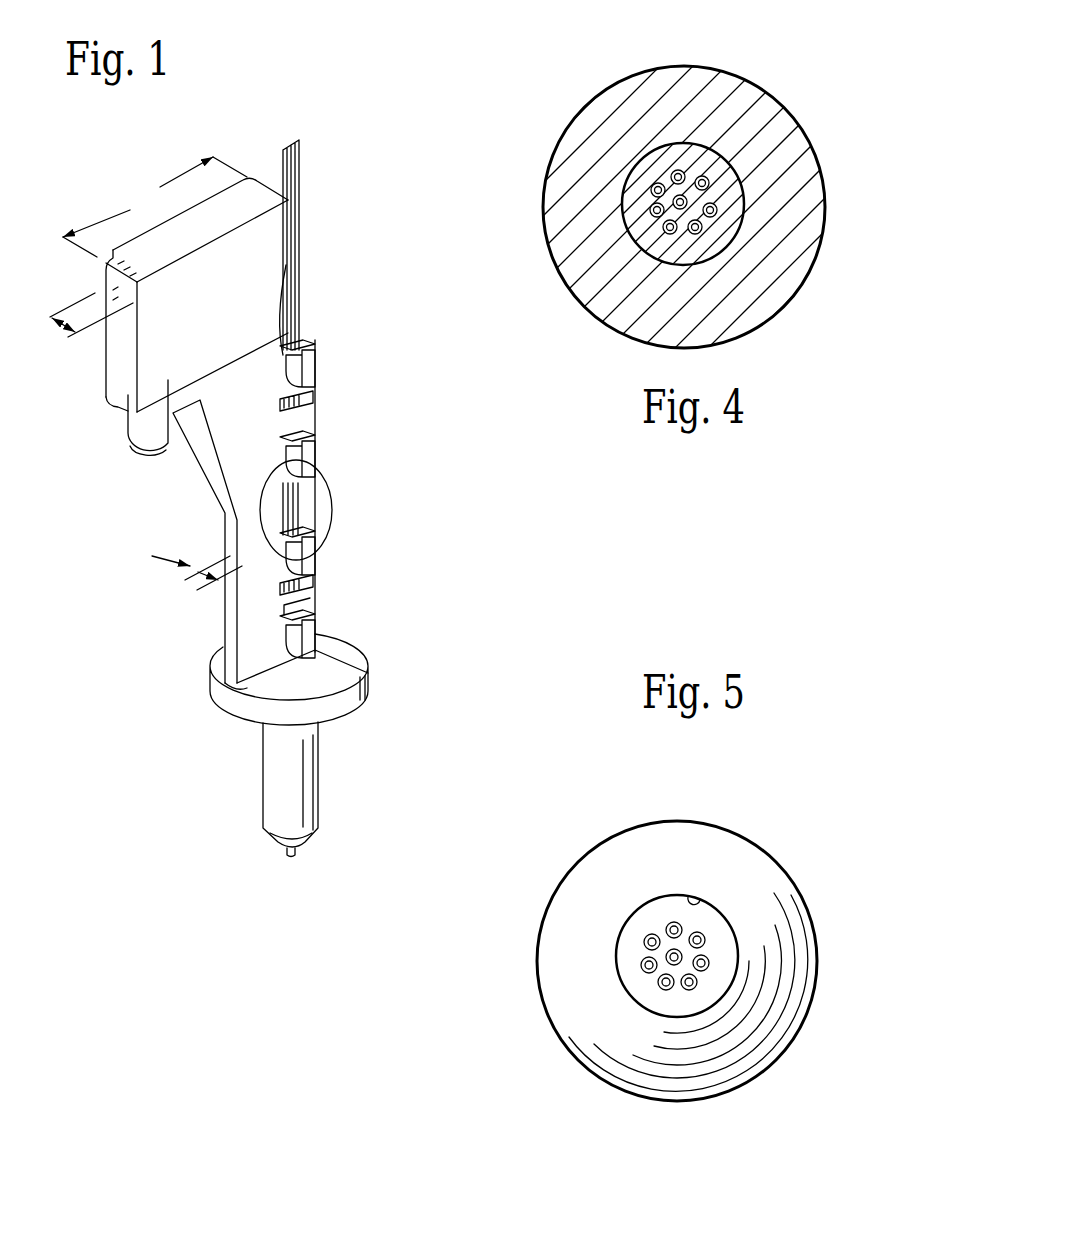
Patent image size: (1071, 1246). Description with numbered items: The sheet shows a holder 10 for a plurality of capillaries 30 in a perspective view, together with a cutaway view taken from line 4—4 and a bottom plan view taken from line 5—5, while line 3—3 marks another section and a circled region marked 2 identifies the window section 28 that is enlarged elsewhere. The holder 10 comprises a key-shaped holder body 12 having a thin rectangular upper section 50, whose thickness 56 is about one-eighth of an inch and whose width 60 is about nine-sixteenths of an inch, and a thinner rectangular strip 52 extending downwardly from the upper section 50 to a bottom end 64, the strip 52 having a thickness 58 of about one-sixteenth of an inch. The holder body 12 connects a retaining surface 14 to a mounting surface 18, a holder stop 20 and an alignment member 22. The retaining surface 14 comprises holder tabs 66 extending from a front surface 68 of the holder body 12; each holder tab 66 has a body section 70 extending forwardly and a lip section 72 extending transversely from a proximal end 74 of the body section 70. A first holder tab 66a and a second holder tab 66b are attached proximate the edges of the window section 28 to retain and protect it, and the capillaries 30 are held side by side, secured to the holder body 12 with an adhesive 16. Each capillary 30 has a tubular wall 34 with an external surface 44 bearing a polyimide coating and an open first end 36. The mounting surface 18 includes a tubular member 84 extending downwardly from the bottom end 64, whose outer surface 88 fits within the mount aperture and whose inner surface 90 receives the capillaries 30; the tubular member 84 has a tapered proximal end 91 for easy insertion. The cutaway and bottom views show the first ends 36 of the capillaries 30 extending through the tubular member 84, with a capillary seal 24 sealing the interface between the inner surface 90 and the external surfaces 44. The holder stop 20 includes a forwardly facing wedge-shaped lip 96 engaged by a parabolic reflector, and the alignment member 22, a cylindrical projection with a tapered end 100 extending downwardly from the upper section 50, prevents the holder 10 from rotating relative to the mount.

In FIG. 1, the holder 10 is at (253, 151).
In FIG. 4, the holder 10 is at (603, 68).
In FIG. 5, the holder 10 is at (812, 846).
In FIG. 1, the holder body 12 is at (200, 447).
In FIG. 1, the retaining surface 14 is at (330, 395).
In FIG. 1, the adhesive 16 is at (292, 262).
In FIG. 1, the mounting surface 18 is at (258, 812).
In FIG. 4, the mounting surface 18 is at (735, 72).
In FIG. 5, the mounting surface 18 is at (709, 819).
In FIG. 1, the holder stop 20 is at (353, 700).
In FIG. 1, the alignment member 22 is at (127, 438).
In FIG. 4, the capillary seal 24 is at (767, 195).
In FIG. 5, the capillary seal 24 is at (727, 967).
In FIG. 1, the window section 28 is at (324, 468).
In FIG. 1, the capillary 30 is at (305, 158).
In FIG. 4, the tubular wall 34 is at (713, 213).
In FIG. 5, the tubular wall 34 is at (709, 929).
In FIG. 1, the first end 36 is at (283, 857).
In FIG. 5, the first end 36 is at (705, 967).
In FIG. 4, the external surface 44 is at (667, 230).
In FIG. 5, the external surface 44 is at (692, 985).
In FIG. 1, the upper section 50 is at (140, 338).
In FIG. 1, the strip 52 is at (227, 457).
In FIG. 1, the thickness 56 is at (58, 326).
In FIG. 1, the thickness 58 is at (185, 565).
In FIG. 1, the width 60 is at (155, 207).
In FIG. 1, the bottom end 64 is at (228, 693).
In FIG. 1, the holder tab 66 is at (372, 435).
In FIG. 1, the first holder tab 66a is at (320, 438).
In FIG. 1, the second holder tab 66b is at (324, 559).
In FIG. 1, the front surface 68 is at (318, 600).
In FIG. 1, the body section 70 is at (316, 400).
In FIG. 1, the lip section 72 is at (312, 370).
In FIG. 1, the proximal end 74 is at (317, 397).
In FIG. 1, the tubular member 84 is at (304, 812).
In FIG. 4, the tubular member 84 is at (595, 123).
In FIG. 5, the tubular member 84 is at (655, 852).
In FIG. 4, the outer surface 88 is at (782, 112).
In FIG. 5, the outer surface 88 is at (775, 853).
In FIG. 4, the inner surface 90 is at (673, 142).
In FIG. 5, the inner surface 90 is at (700, 900).
In FIG. 1, the tapered proximal end 91 is at (300, 848).
In FIG. 5, the tapered proximal end 91 is at (795, 922).
In FIG. 1, the wedge-shaped lip 96 is at (360, 658).
In FIG. 1, the tapered end 100 is at (140, 448).
In FIG. 1, the detail view region FIG. 2 is at (318, 547).
In FIG. 1, the section line 3- 3 is at (227, 597).
In FIG. 1, the section line 4- 4 is at (255, 755).
In FIG. 1, the section line 5- 5 is at (228, 875).